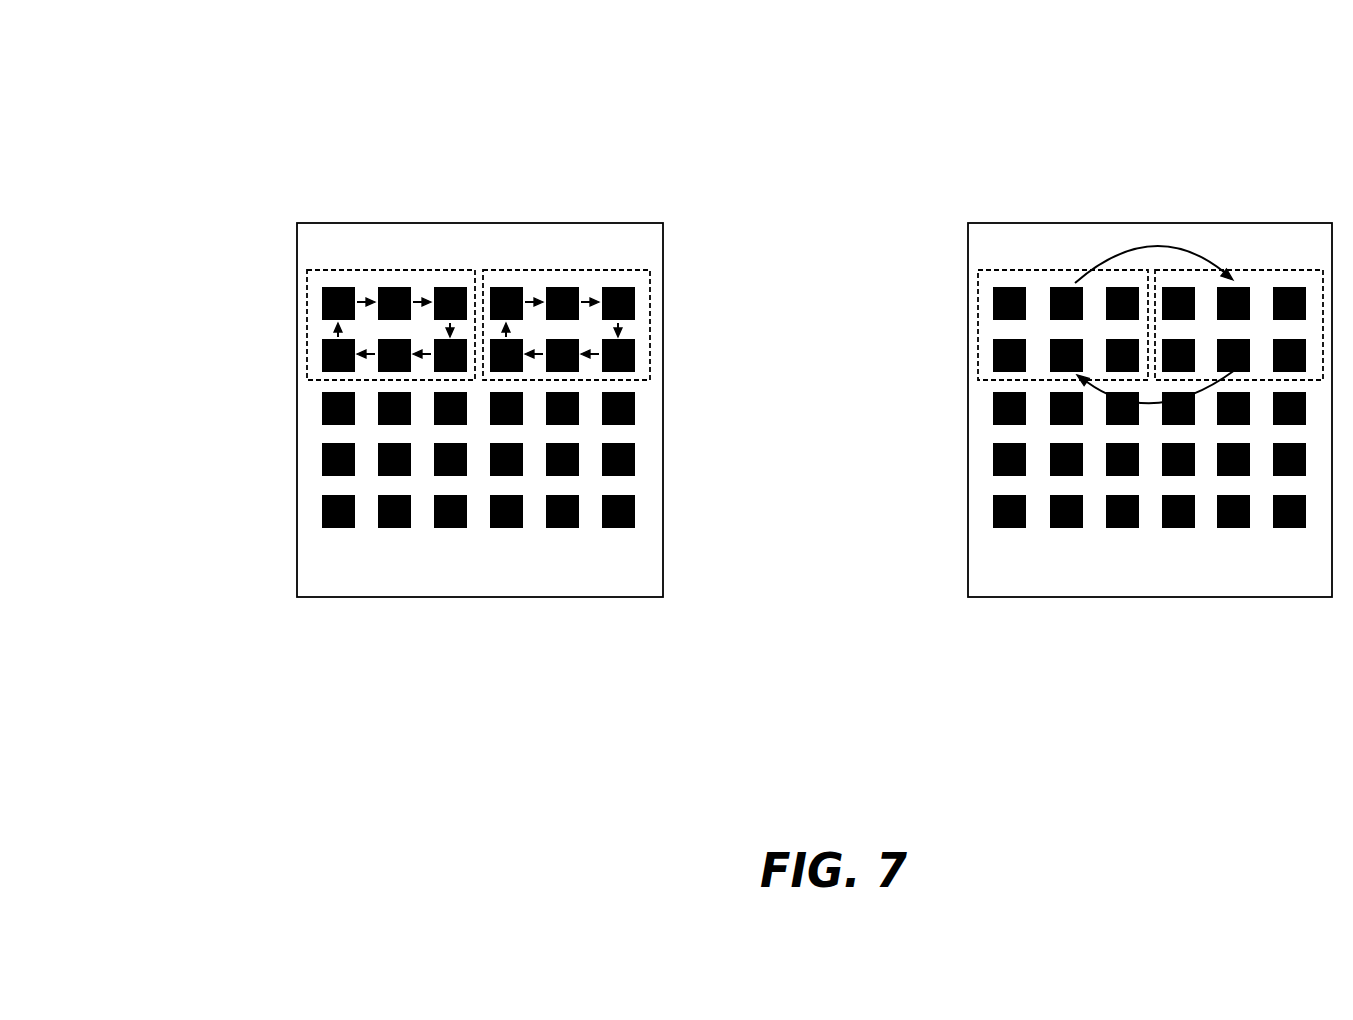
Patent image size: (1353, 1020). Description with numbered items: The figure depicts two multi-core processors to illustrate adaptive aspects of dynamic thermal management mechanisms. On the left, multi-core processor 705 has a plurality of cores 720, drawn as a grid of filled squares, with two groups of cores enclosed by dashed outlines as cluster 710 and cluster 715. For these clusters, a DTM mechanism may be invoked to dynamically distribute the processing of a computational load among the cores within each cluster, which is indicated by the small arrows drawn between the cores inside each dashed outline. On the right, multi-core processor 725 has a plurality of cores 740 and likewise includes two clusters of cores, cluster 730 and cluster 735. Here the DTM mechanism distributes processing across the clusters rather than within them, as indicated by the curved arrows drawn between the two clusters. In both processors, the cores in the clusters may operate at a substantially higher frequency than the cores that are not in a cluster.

The multi-core processor 705 is at (438, 326).
The cluster 710 is at (357, 270).
The cluster 715 is at (618, 270).
The cores 720 is at (322, 487).
The multi-core processor 725 is at (1111, 326).
The cluster 730 is at (1060, 270).
The cluster 735 is at (1308, 270).
The cores 740 is at (993, 487).